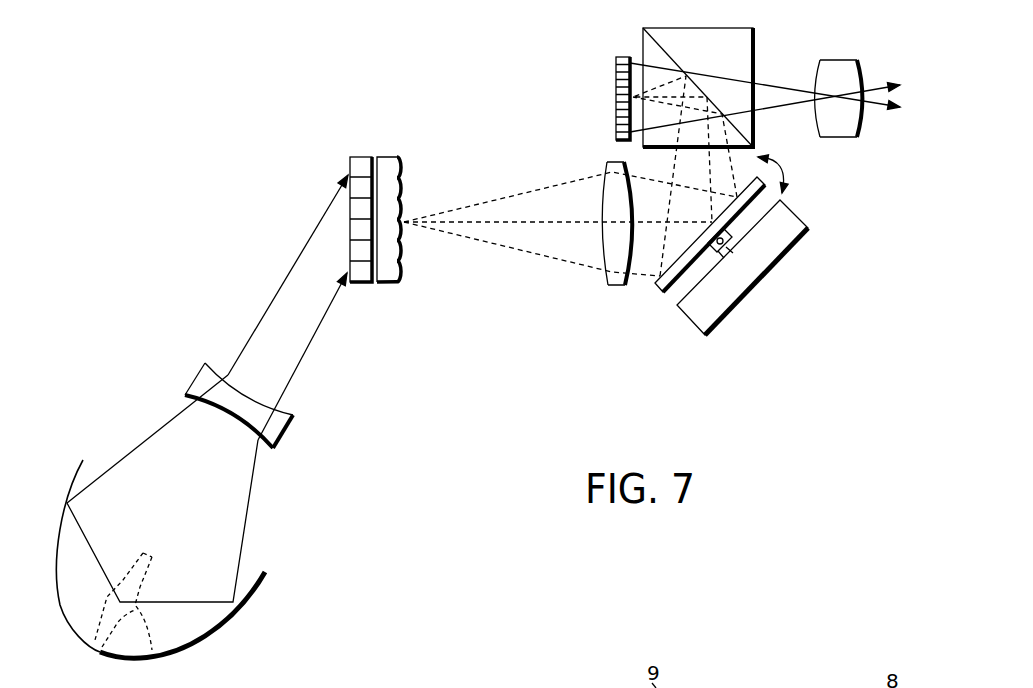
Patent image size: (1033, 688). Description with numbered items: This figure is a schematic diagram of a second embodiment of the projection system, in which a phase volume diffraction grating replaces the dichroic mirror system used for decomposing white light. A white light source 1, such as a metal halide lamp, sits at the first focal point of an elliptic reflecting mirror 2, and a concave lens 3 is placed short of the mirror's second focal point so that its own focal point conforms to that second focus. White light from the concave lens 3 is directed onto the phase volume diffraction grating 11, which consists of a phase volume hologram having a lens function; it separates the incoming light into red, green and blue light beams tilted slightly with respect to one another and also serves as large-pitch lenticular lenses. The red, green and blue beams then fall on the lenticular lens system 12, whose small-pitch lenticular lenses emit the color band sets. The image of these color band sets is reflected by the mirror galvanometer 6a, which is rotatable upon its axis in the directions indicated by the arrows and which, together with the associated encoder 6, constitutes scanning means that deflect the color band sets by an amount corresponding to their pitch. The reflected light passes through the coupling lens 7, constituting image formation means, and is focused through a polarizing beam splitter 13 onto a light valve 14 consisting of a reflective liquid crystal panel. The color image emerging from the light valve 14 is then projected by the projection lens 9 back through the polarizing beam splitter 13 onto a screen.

The white light source 1 is at (150, 652).
The elliptic reflecting mirror 2 is at (213, 628).
The concave lens 3 is at (192, 383).
The encoder 6 is at (743, 300).
The mirror galvanometer 6a is at (655, 294).
The coupling lens 7 is at (618, 288).
The projection lens 9 is at (836, 58).
The phase volume diffraction grating 11 is at (360, 156).
The lenticular lens system 12 is at (386, 156).
The polarizing beam splitter 13 is at (756, 42).
The light valve 14 is at (614, 95).